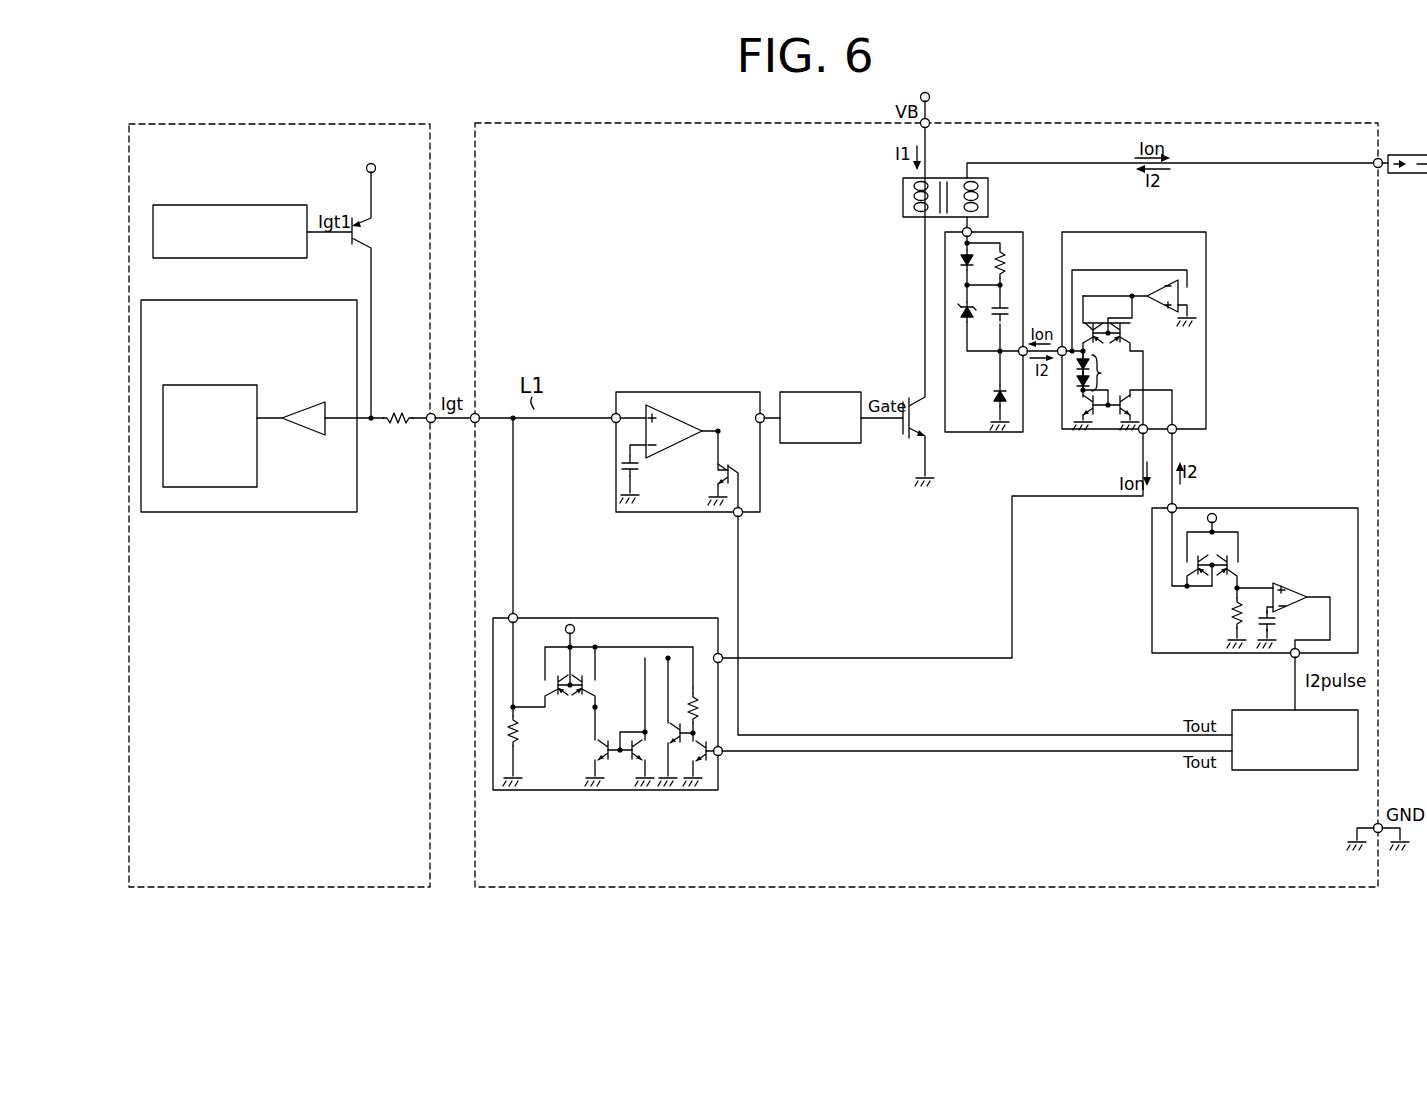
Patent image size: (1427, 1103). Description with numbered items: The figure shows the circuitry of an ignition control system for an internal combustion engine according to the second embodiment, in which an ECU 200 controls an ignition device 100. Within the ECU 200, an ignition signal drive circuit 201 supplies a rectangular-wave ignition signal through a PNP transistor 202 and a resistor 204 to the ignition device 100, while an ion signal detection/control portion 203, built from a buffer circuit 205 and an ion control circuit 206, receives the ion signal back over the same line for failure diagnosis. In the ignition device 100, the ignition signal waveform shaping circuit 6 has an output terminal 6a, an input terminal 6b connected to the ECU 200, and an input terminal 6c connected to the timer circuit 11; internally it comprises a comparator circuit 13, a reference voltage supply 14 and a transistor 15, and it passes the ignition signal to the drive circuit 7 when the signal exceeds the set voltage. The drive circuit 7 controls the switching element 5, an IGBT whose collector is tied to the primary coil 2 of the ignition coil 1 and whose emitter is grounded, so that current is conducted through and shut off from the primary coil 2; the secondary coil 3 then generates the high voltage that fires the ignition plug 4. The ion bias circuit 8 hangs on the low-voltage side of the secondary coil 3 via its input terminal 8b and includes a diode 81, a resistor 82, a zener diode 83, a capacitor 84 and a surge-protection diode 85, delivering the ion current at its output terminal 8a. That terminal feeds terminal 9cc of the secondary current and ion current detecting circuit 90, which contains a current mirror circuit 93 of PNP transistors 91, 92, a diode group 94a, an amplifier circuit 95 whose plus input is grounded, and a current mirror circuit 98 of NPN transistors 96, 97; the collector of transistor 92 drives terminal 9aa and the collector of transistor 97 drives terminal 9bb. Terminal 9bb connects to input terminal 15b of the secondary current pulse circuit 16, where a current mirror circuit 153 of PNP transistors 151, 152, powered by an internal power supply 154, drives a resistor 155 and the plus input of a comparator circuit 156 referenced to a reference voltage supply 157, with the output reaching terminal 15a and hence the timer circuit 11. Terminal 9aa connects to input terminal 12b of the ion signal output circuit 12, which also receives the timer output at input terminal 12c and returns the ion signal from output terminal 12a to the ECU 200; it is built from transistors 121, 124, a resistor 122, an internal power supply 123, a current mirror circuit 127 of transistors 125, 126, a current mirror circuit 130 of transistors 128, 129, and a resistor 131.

The electronic control unit (ECU) 200 is at (250, 123).
The ignition signal drive circuit 201 is at (255, 204).
The PNP transistor 202 is at (376, 240).
The ion signal detection/control portion 203 is at (252, 299).
The resistor 204 is at (400, 409).
The buffer circuit 205 is at (300, 405).
The ion control circuit 206 is at (216, 383).
The ignition device 100 is at (602, 123).
The ignition signal waveform shaping circuit 6 is at (638, 391).
The output terminal 6a is at (762, 413).
The input terminal 6b is at (612, 413).
The input terminal 6c is at (734, 516).
The comparator circuit 13 is at (666, 410).
The reference voltage supply 14 is at (630, 466).
The transistor 15 is at (740, 466).
The drive circuit 7 is at (822, 391).
The switching element 5 is at (913, 402).
The ignition coil 1 is at (903, 187).
The primary coil 2 is at (909, 202).
The secondary coil 3 is at (970, 177).
The ignition plug 4 is at (1414, 155).
The ion bias circuit 8 is at (1023, 234).
The output terminal 8a is at (1024, 355).
The input terminal 8b is at (971, 230).
The diode 81 is at (958, 260).
The resistor 82 is at (997, 270).
The zener diode 83 is at (960, 312).
The capacitor 84 is at (990, 312).
The diode 85 is at (994, 404).
The secondary current and ion current detecting circuit 90 is at (1192, 232).
The terminal 9cc is at (1060, 348).
The terminal 9aa is at (1138, 434).
The terminal 9bb is at (1178, 432).
The transistor 91 is at (1088, 297).
The transistor 92 is at (1128, 336).
The current mirror circuit 93 is at (1114, 314).
The diode group 94a is at (1115, 373).
The amplifier circuit 95 is at (1162, 287).
The transistor 96 is at (1082, 405).
The transistor 97 is at (1128, 407).
The current mirror circuit 98 is at (1101, 410).
The secondary current pulse circuit 16 is at (1332, 508).
The terminal 15a is at (1292, 656).
The input terminal 15b is at (1177, 508).
The transistor 151 is at (1195, 565).
The transistor 152 is at (1230, 566).
The current mirror circuit 153 is at (1211, 558).
The internal power supply 154 is at (1216, 518).
The resistor 155 is at (1229, 614).
The comparator circuit 156 is at (1286, 584).
The reference voltage supply 157 is at (1276, 626).
The timer circuit 11 is at (1297, 772).
The ion signal output circuit 12 is at (655, 617).
The output terminal 12a is at (516, 616).
The input terminal 12b is at (718, 654).
The input terminal 12c is at (720, 754).
The transistor 121 is at (698, 760).
The resistor 122 is at (695, 702).
The internal power supply 123 is at (572, 624).
The transistor 124 is at (679, 742).
The transistor 125 is at (641, 758).
The transistor 126 is at (606, 751).
The current mirror circuit 127 is at (629, 757).
The transistor 128 is at (590, 690).
The transistor 129 is at (554, 691).
The current mirror circuit 130 is at (619, 666).
The resistor 131 is at (514, 730).